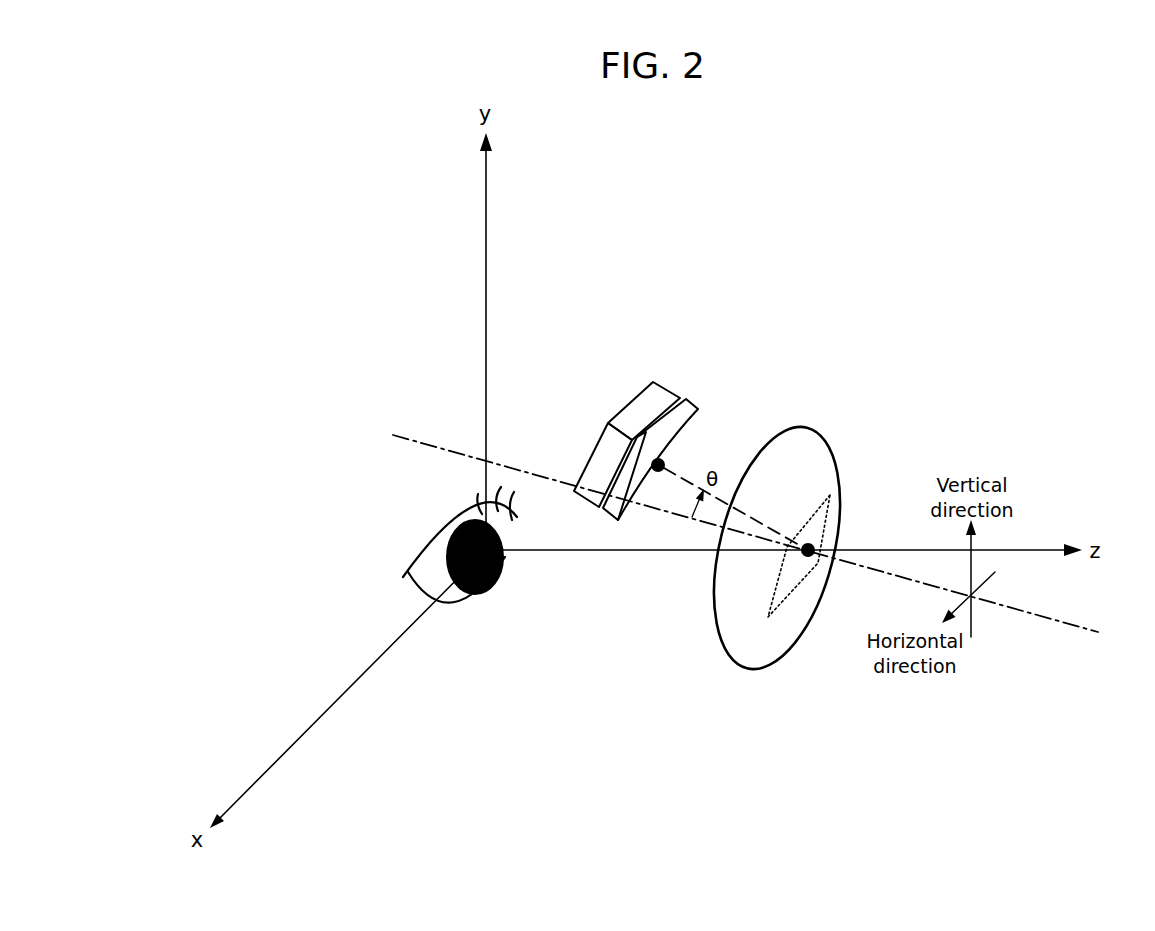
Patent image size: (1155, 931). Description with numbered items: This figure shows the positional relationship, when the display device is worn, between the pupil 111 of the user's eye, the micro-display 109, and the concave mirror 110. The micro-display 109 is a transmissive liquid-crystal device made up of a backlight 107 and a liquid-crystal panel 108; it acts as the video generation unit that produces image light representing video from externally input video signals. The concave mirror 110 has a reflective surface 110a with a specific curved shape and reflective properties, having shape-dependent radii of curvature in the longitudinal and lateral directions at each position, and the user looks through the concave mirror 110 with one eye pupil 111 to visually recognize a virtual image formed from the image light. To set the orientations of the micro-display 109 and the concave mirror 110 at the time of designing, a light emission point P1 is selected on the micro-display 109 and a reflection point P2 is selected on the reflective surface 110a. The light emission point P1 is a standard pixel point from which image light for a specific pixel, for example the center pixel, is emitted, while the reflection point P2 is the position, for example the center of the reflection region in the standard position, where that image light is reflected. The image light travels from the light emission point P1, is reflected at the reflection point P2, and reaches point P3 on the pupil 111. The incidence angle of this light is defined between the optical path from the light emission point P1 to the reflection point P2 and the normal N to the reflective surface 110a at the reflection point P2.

The backlight 107 is at (668, 392).
The liquid-crystal panel 108 is at (690, 400).
The micro-display 109 is at (672, 384).
The concave mirror 110 is at (782, 662).
The reflective surface 110a is at (730, 617).
The pupil 111 is at (500, 572).
The normal N is at (393, 437).
The light emission point P1 is at (664, 464).
The reflection point P2 is at (812, 547).
The point on pupil P3 is at (507, 530).